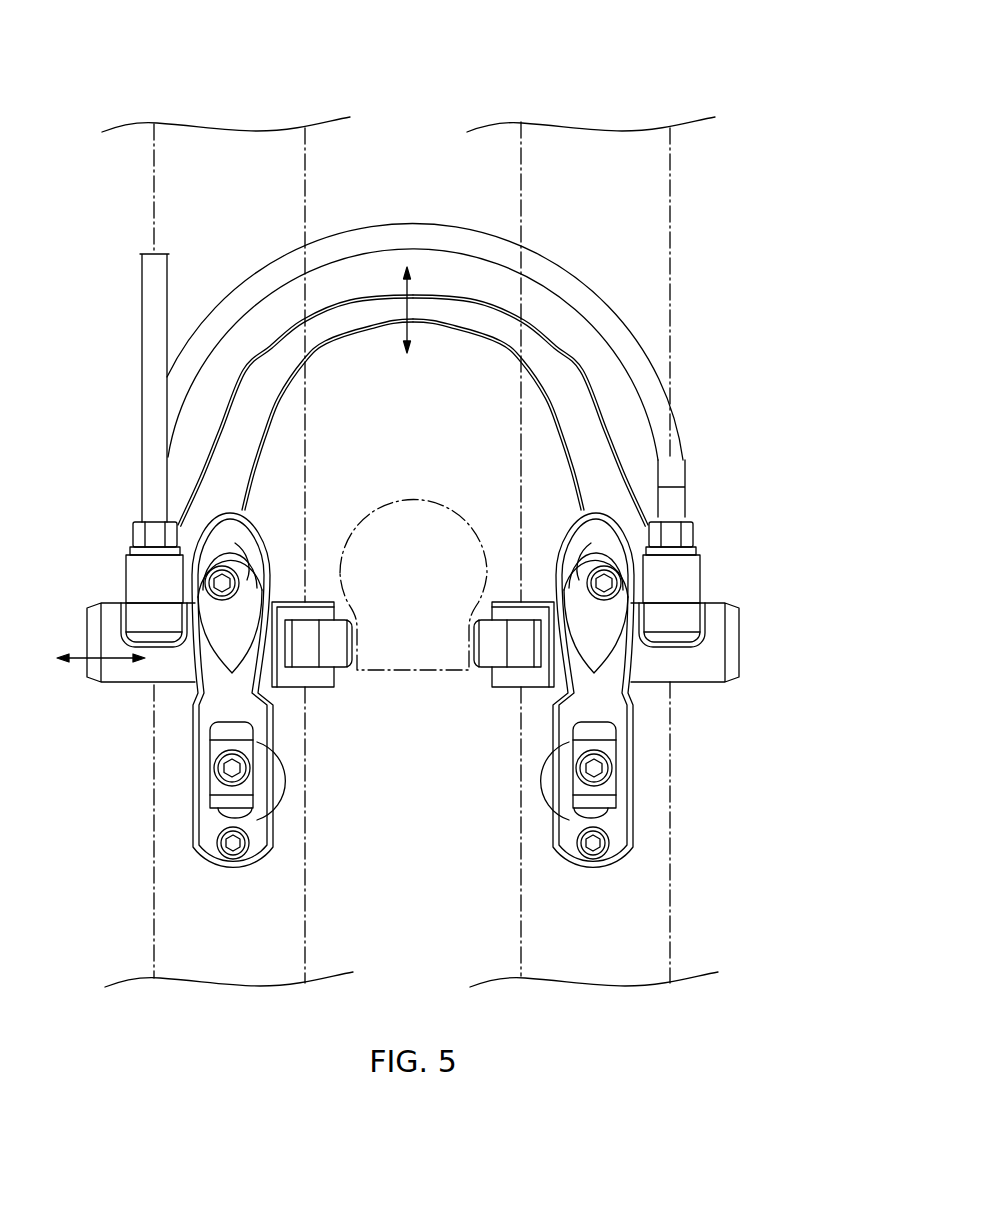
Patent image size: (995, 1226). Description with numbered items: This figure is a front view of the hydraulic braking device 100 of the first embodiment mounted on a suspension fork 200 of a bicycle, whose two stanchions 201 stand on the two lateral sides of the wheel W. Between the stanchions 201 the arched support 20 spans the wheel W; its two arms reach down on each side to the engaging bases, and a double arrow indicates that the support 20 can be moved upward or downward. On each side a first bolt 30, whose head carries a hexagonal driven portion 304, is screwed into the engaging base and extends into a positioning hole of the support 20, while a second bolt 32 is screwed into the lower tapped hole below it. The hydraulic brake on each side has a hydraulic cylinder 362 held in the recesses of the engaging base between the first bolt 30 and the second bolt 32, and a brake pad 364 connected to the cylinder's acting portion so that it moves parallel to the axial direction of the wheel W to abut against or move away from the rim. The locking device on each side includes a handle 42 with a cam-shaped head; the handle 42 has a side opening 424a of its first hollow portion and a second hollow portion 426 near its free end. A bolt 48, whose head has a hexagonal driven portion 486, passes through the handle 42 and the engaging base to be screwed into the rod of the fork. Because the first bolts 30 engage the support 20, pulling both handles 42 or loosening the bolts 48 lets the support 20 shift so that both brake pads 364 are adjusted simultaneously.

The suspension fork 200 is at (618, 120).
The stanchion 201 is at (283, 170).
The support 20 is at (452, 307).
The hydraulic braking device 100 is at (400, 544).
The wheel W is at (413, 502).
The first bolt 30 is at (218, 558).
The driven portion 304 is at (222, 583).
The second hollow portion 426 is at (250, 550).
The hydraulic cylinder 362 is at (125, 675).
The brake pad 364 is at (338, 652).
The handle 42 is at (220, 693).
The side opening 424a is at (213, 782).
The driven portion 486 is at (245, 765).
The bolt 48 is at (243, 770).
The second bolt 32 is at (210, 850).